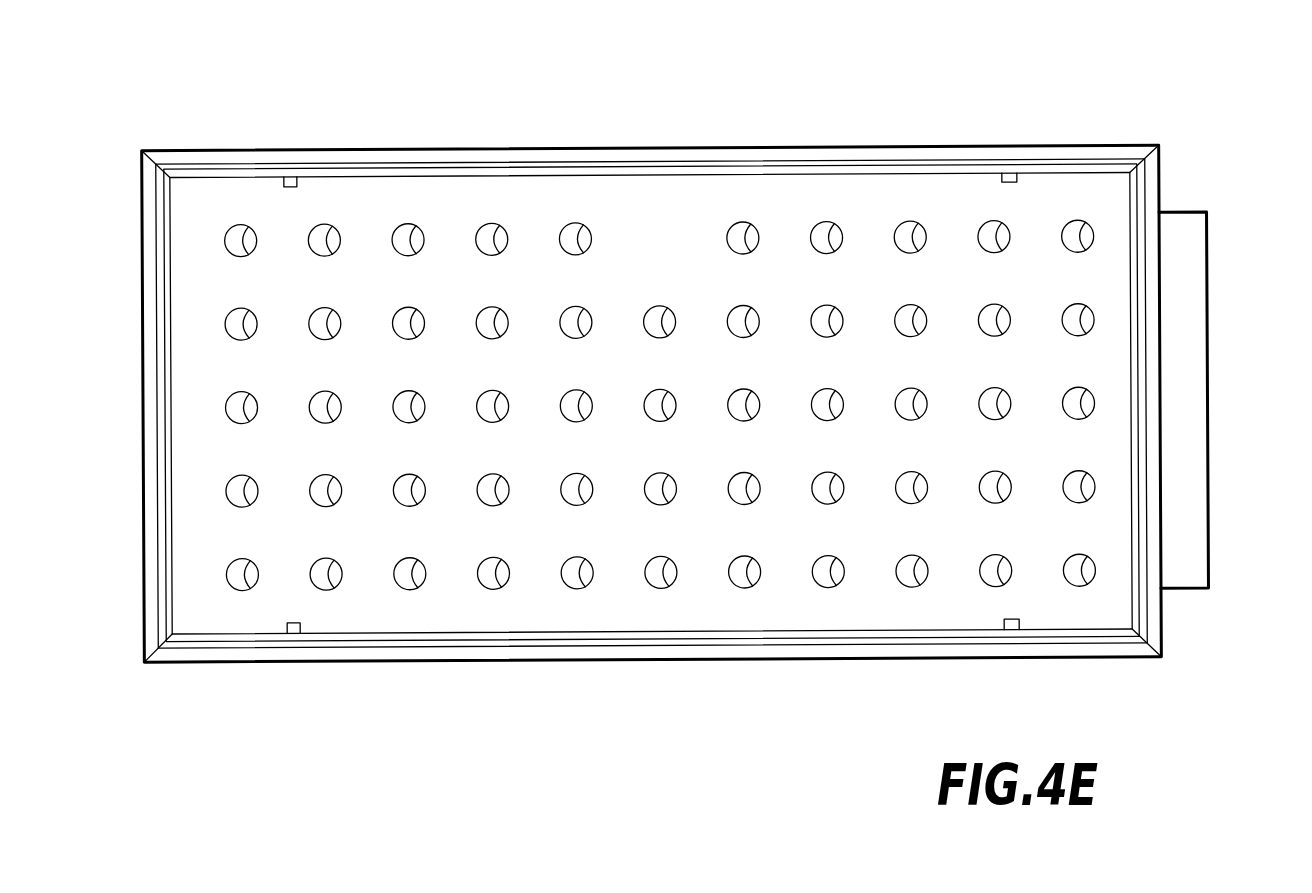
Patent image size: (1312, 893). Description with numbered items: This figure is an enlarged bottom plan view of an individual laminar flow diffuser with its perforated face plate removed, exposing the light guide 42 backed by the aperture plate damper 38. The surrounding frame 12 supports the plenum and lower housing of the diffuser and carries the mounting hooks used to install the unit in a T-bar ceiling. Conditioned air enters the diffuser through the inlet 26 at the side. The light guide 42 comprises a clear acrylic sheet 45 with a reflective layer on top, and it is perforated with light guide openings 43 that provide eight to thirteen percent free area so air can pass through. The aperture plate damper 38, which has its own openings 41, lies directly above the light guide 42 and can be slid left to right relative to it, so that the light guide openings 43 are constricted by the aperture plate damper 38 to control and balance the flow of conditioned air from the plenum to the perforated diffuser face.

The frame 12 is at (258, 162).
The light guide 42 is at (1113, 192).
The clear acrylic sheet 45 is at (375, 600).
The inlet 26 is at (1178, 280).
The aperture plate damper 38 is at (655, 228).
The light guide openings 43 is at (480, 226).
The openings 41 is at (845, 238).